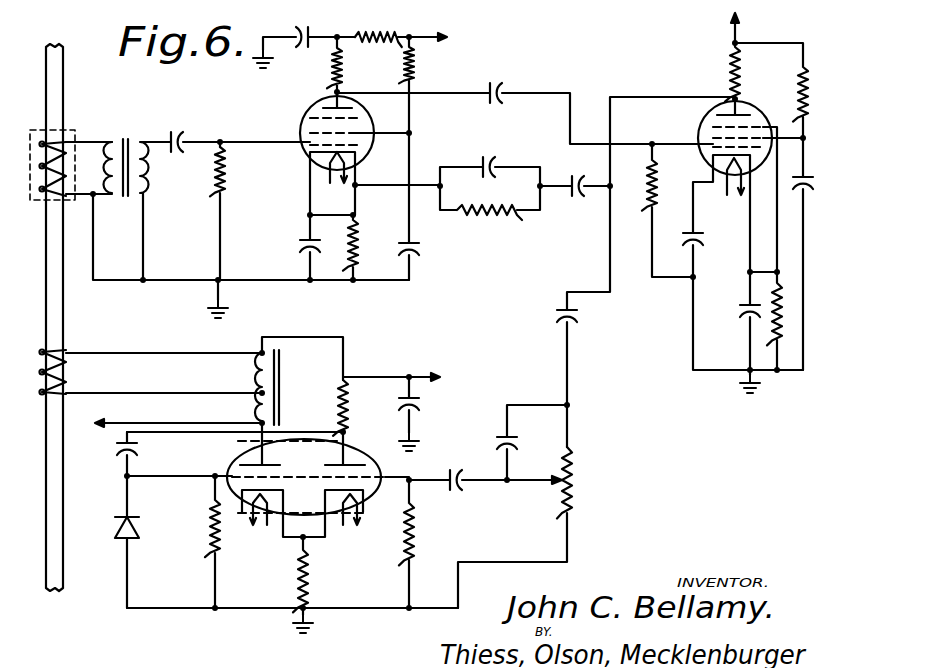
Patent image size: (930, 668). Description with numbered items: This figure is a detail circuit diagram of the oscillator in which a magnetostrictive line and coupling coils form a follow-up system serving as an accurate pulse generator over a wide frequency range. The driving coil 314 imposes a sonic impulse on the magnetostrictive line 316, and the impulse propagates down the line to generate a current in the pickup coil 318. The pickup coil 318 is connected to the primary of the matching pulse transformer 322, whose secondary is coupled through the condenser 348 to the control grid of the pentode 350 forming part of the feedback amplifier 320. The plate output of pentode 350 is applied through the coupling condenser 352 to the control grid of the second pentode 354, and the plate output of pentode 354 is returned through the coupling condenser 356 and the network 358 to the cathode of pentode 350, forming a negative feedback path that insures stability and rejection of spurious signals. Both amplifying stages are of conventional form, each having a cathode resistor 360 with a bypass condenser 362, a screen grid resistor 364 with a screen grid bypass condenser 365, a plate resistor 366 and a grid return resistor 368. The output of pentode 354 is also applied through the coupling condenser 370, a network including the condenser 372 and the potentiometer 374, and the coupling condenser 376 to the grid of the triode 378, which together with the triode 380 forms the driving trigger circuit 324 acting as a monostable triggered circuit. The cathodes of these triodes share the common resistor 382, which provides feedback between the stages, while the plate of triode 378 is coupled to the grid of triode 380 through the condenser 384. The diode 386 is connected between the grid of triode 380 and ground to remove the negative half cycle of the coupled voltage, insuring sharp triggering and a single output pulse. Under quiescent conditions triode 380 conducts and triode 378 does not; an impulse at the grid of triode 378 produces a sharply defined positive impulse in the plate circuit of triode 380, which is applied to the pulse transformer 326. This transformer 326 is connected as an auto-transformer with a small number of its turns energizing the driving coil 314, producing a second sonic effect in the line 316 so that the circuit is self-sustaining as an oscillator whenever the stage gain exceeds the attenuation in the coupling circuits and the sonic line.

The driving coil 314 is at (66, 372).
The magnetostrictive line 316 is at (62, 313).
The pickup coil 318 is at (67, 152).
The feedback amplifier 320 is at (541, 259).
The matching pulse transformer 322 is at (126, 140).
The driving trigger circuit 324 is at (312, 536).
The pulse transformer 326 is at (258, 350).
The condenser 348 is at (178, 135).
The pentode 350 is at (305, 110).
The coupling condenser 352 is at (497, 84).
The second pentode 354 is at (700, 130).
The coupling condenser 356 is at (578, 177).
The network 358 is at (458, 165).
The cathode resistor 360 is at (358, 235).
The bypass condenser 362 is at (305, 245).
The screen grid resistor 364 is at (407, 72).
The screen grid bypass condenser 365 is at (418, 257).
The plate resistor 366 is at (335, 72).
The grid return resistor 368 is at (215, 185).
The coupling condenser 370 is at (578, 318).
The condenser 372 is at (500, 440).
The potentiometer 374 is at (572, 475).
The coupling condenser 376 is at (452, 490).
The triode 378 is at (356, 522).
The triode 380 is at (252, 525).
The common resistor 382 is at (308, 580).
The condenser 384 is at (138, 450).
The diode 386 is at (135, 530).